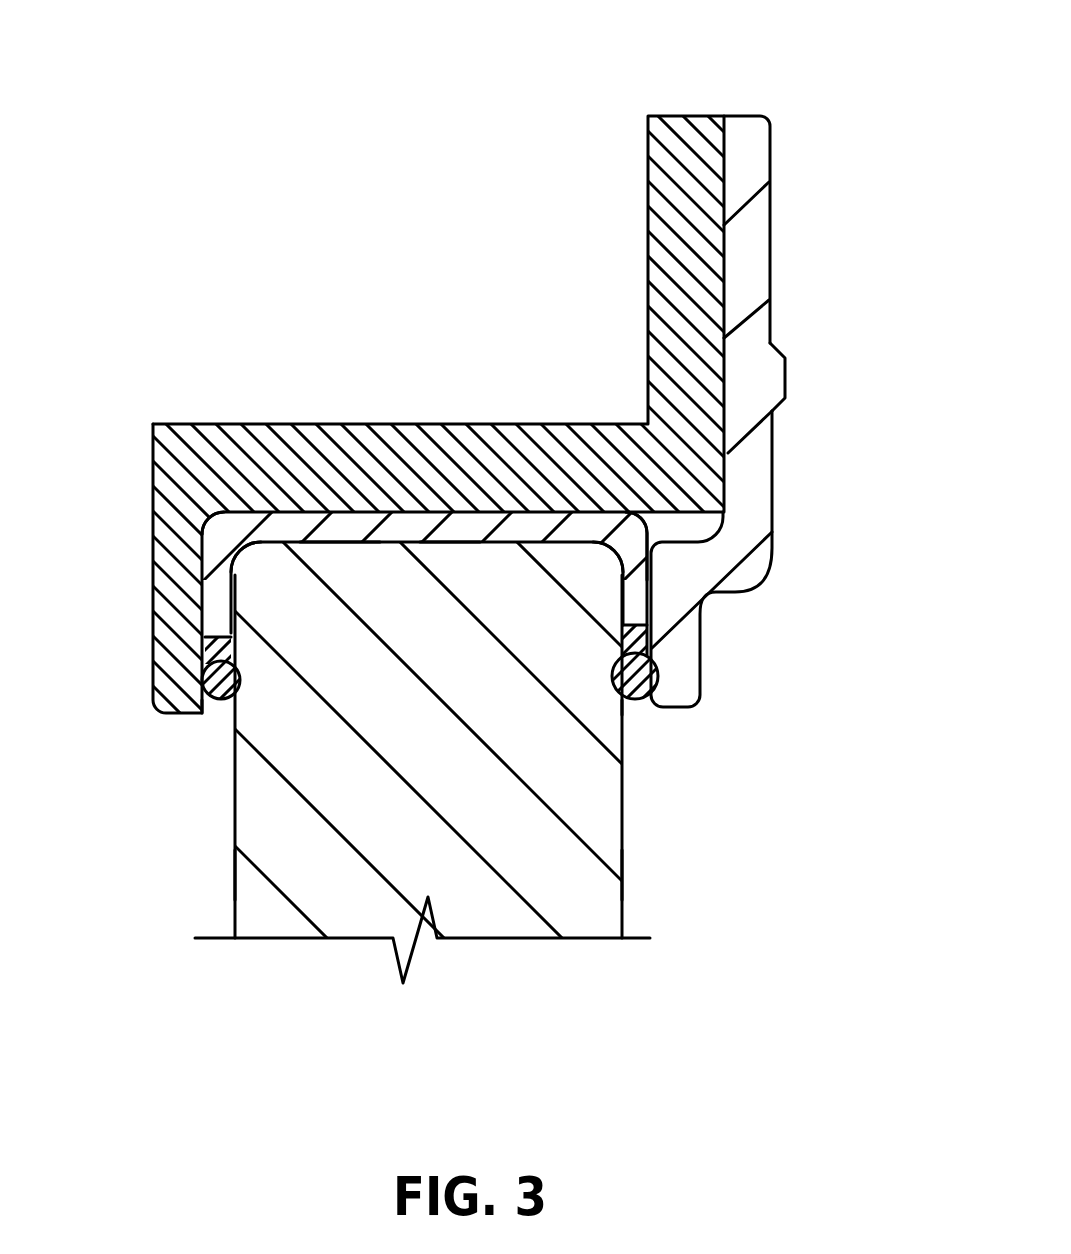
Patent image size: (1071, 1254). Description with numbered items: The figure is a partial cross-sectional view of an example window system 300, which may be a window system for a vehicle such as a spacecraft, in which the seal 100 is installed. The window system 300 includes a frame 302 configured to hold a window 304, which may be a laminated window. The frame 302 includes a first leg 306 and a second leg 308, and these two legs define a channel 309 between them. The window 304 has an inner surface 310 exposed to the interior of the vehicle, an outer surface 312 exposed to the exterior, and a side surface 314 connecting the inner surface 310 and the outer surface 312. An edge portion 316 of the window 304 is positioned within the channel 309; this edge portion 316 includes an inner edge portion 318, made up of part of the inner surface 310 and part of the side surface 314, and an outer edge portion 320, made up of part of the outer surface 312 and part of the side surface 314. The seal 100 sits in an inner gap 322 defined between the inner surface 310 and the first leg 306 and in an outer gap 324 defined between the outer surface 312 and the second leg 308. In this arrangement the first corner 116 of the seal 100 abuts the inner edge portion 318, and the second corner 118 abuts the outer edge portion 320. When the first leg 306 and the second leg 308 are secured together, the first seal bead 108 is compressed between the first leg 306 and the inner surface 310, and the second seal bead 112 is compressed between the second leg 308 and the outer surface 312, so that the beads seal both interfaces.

The window system 300 is at (445, 627).
The frame 302 is at (464, 627).
The window 304 is at (590, 938).
The first leg 306 is at (785, 383).
The second leg 308 is at (153, 537).
The channel 309 is at (337, 567).
The inner surface 310 is at (622, 875).
The outer surface 312 is at (235, 875).
The side surface 314 is at (450, 543).
The edge portion 316 is at (427, 748).
The inner edge portion 318 is at (592, 575).
The outer edge portion 320 is at (262, 575).
The inner gap 322 is at (637, 712).
The outer gap 324 is at (213, 722).
The seal 100 is at (496, 569).
The first seal bead 108 is at (650, 702).
The second seal bead 112 is at (210, 700).
The first corner 116 is at (622, 540).
The second corner 118 is at (225, 538).